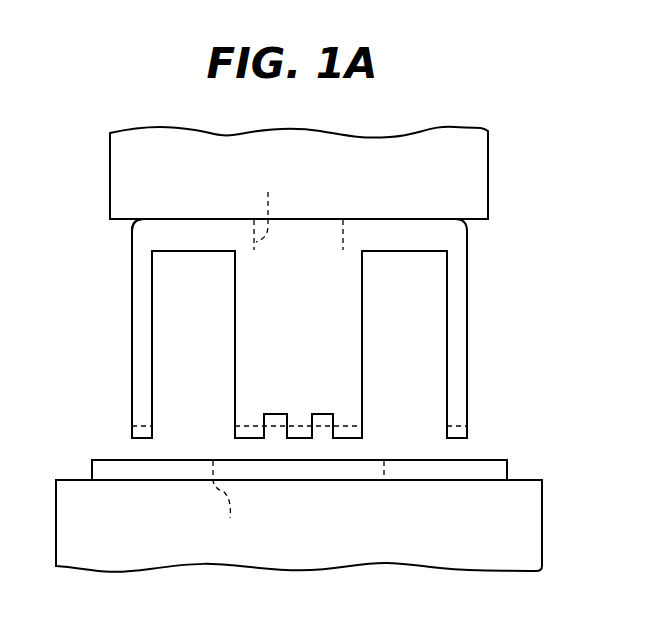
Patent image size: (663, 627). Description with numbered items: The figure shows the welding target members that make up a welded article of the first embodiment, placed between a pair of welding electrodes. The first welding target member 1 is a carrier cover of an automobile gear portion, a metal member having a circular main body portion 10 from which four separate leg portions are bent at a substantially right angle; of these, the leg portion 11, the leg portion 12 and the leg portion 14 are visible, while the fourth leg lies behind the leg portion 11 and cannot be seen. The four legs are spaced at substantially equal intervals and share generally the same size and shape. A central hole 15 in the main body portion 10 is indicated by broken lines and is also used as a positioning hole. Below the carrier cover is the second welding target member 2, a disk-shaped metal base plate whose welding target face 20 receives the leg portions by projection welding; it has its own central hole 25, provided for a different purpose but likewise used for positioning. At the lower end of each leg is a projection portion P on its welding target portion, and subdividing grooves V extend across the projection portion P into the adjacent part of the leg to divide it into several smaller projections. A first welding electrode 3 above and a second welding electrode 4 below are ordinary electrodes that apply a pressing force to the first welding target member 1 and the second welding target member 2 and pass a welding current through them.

The first welding target member 1 is at (497, 273).
The second welding target member 2 is at (90, 474).
The first welding electrode 3 is at (477, 173).
The second welding electrode 4 is at (525, 530).
The main body portion 10 is at (140, 230).
The leg portion 11 is at (352, 353).
The leg portion 12 is at (455, 353).
The leg portion 14 is at (141, 352).
The central hole 15 is at (267, 205).
The welding target face 20 is at (473, 460).
The central hole 25 is at (235, 501).
The projection portion P is at (140, 432).
The subdividing groove V is at (275, 436).